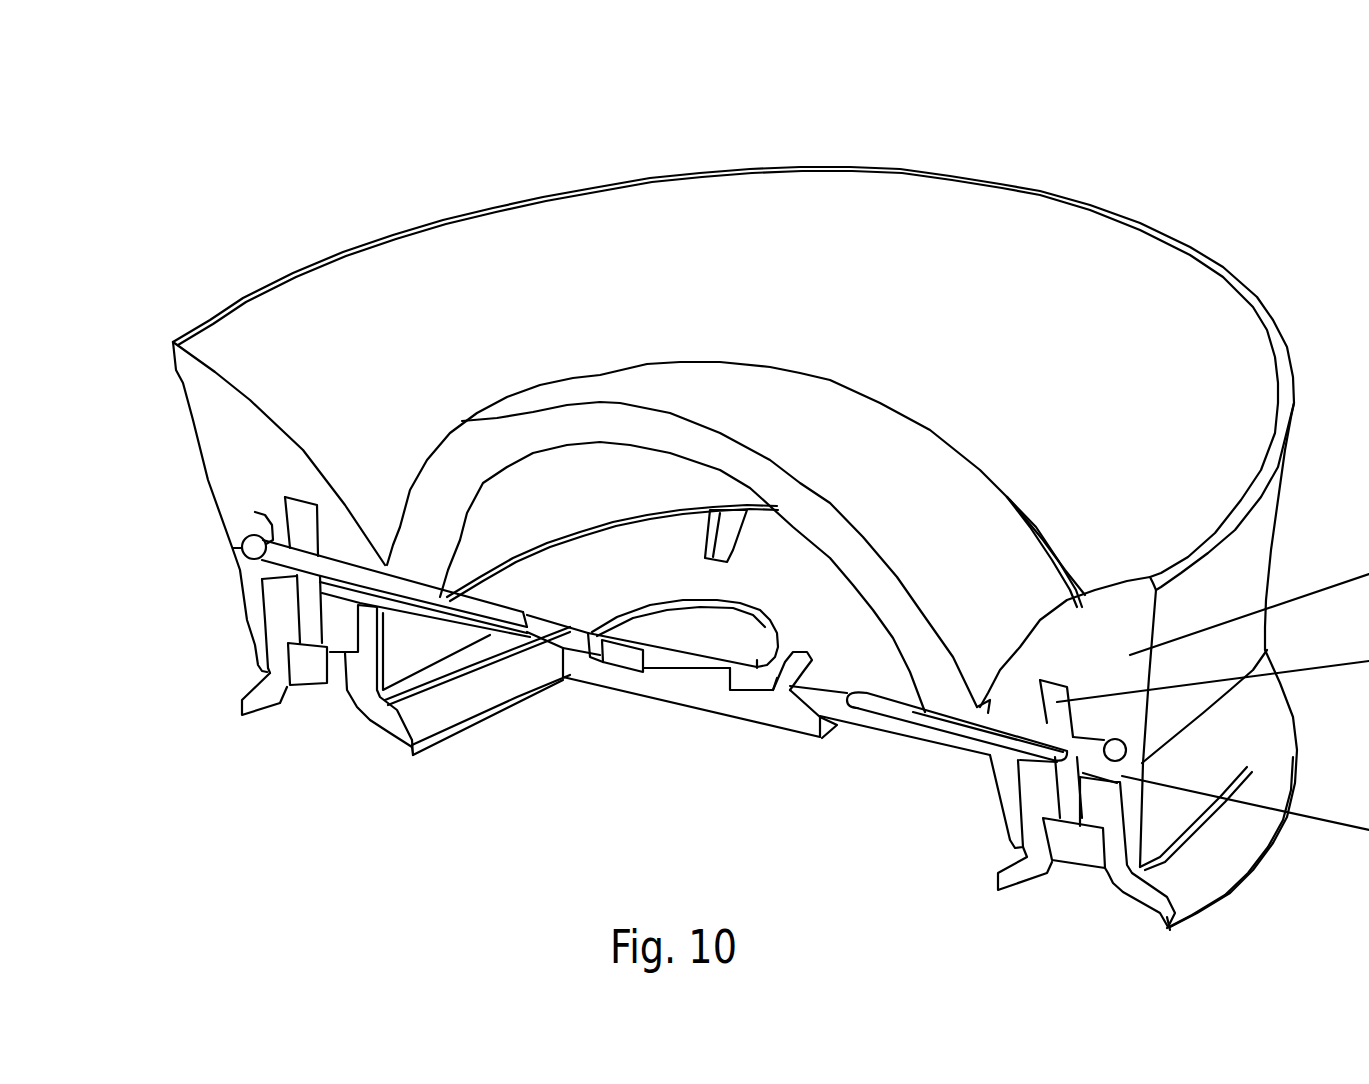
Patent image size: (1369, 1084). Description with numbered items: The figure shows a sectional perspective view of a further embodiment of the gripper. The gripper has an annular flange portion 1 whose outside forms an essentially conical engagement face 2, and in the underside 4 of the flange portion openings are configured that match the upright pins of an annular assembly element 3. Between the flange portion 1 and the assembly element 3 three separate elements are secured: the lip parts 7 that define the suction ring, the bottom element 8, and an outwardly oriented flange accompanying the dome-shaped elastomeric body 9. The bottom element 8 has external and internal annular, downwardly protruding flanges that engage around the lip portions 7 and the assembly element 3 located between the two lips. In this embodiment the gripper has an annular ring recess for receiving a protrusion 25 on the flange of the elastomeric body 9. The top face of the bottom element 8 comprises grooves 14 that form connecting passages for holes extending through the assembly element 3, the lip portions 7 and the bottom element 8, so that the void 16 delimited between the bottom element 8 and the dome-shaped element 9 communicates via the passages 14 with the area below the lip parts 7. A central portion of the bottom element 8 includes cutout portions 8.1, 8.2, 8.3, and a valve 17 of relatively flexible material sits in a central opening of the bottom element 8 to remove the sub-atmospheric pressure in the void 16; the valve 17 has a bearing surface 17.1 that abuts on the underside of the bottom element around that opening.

The annular flange portion 1 is at (220, 428).
The engagement face 2 is at (1248, 562).
The assembly element 3 is at (1078, 868).
The underside of the flange portion 4 is at (255, 512).
The lip parts 7 is at (280, 620).
The bottom element 8 is at (247, 577).
The cutout portion 8.1 is at (813, 653).
The cutout portion 8.2 is at (783, 630).
The cutout portion 8.3 is at (617, 648).
The dome-shaped element 9 is at (790, 410).
The grooves 14 is at (490, 637).
The void 16 is at (628, 485).
The valve 17 is at (673, 712).
The bearing surface 17.1 is at (610, 680).
The protrusion 25 is at (300, 518).